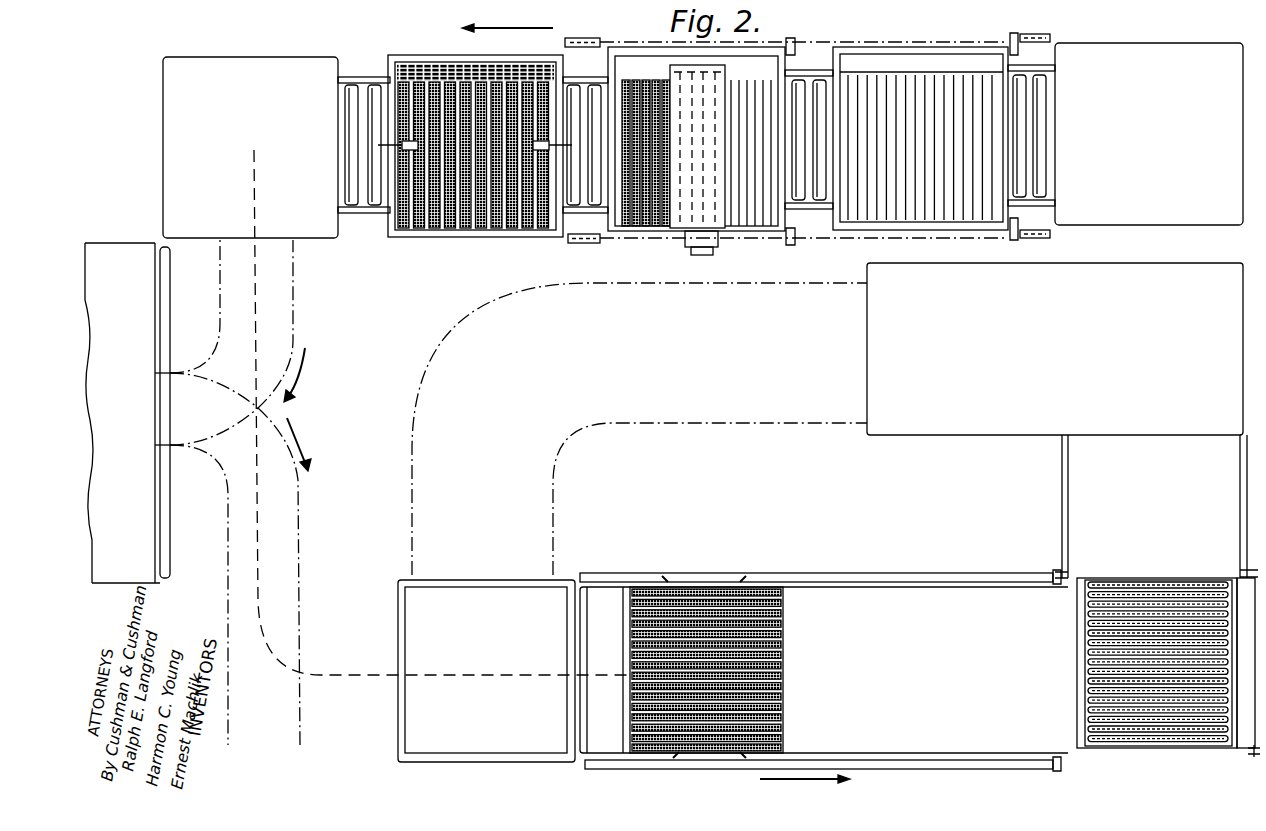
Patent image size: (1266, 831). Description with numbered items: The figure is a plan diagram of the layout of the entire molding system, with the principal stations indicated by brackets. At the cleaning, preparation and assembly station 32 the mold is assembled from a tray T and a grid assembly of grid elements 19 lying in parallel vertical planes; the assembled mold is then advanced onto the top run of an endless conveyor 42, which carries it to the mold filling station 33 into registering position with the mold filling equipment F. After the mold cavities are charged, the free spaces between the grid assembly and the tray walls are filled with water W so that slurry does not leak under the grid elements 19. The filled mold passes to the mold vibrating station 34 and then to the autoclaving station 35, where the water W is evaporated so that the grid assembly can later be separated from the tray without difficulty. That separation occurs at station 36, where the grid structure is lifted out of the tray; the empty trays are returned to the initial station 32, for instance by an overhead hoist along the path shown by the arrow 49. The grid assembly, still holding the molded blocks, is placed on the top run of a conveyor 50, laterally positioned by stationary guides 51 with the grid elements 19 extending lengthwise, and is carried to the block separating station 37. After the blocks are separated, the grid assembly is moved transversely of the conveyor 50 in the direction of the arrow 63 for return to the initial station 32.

The water W is at (398, 95).
The mold filling equipment F is at (666, 74).
The endless conveyor 42 is at (862, 45).
The grid elements 19 is at (882, 200).
The tray T is at (958, 231).
The mold vibrating station 34 is at (345, 246).
The mold filling station 33 is at (790, 250).
The autoclaving station 35 is at (178, 398).
The arrow indicating tray return path 49 is at (602, 443).
The cleaning, preparation and assembly station 32 is at (1240, 441).
The arrow indicating grid assembly return direction 63 is at (1044, 468).
The stationary guides 51 is at (718, 582).
The conveyor 50 is at (853, 592).
The grid separation station 36 is at (575, 768).
The block separation station 37 is at (1240, 752).